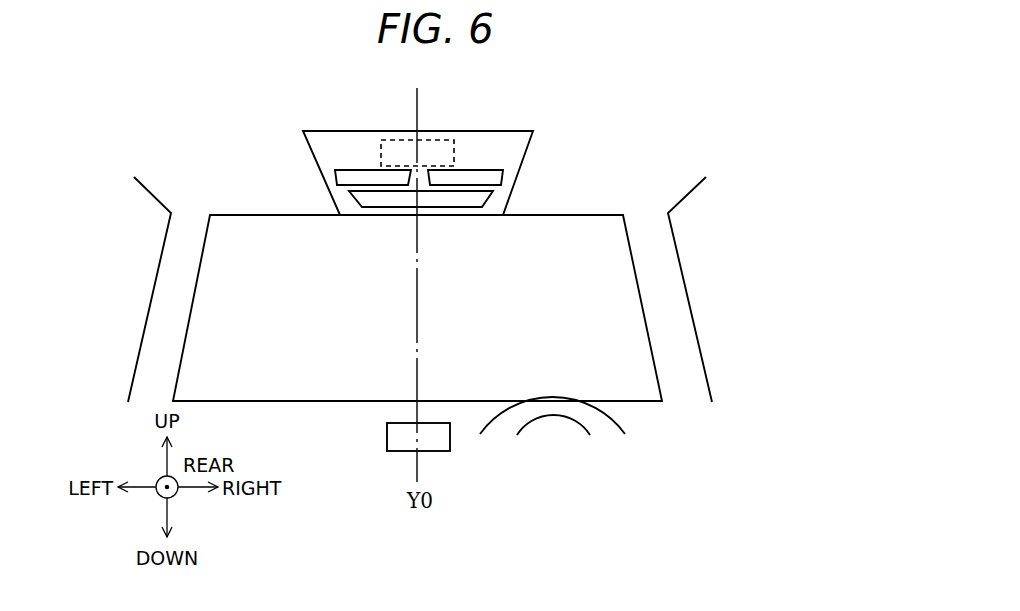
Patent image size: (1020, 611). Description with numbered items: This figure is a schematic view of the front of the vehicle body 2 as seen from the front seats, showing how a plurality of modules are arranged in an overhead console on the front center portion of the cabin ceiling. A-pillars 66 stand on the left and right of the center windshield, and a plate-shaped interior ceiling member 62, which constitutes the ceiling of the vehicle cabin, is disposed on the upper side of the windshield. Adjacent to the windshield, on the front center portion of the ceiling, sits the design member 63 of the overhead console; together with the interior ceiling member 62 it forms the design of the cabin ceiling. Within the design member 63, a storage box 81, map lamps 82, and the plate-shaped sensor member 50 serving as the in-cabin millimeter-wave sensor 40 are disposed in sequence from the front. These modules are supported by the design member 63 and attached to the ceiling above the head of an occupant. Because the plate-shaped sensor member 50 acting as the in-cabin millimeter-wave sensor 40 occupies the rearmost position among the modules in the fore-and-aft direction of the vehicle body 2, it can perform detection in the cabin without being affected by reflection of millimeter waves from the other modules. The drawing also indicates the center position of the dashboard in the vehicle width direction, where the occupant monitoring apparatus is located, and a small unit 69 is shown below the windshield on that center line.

The vehicle body 2 is at (462, 289).
The in-cabin millimeter-wave sensor 40 is at (471, 114).
The plate-shaped sensor member 50 is at (450, 142).
The interior ceiling member 62 is at (227, 183).
The design member 63 is at (517, 148).
The A-pillars 66 is at (667, 305).
The steering column display 69 is at (389, 439).
The storage box 81 is at (472, 202).
The map lamps 82 is at (475, 173).